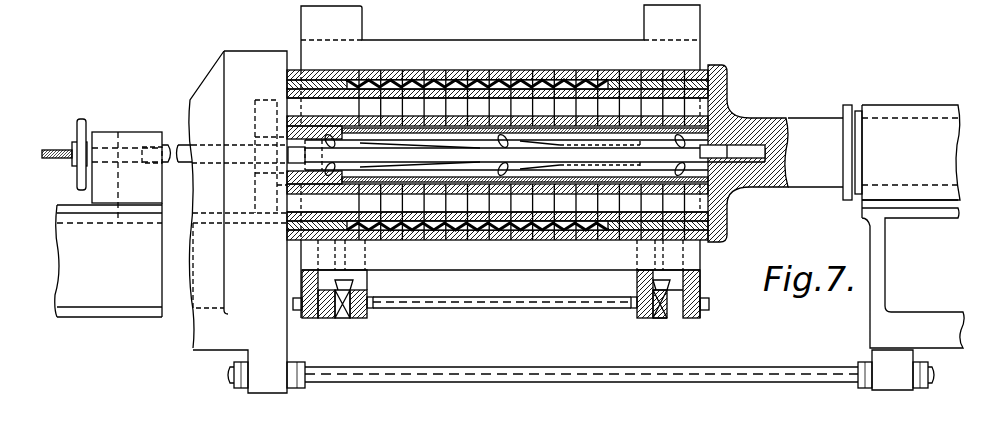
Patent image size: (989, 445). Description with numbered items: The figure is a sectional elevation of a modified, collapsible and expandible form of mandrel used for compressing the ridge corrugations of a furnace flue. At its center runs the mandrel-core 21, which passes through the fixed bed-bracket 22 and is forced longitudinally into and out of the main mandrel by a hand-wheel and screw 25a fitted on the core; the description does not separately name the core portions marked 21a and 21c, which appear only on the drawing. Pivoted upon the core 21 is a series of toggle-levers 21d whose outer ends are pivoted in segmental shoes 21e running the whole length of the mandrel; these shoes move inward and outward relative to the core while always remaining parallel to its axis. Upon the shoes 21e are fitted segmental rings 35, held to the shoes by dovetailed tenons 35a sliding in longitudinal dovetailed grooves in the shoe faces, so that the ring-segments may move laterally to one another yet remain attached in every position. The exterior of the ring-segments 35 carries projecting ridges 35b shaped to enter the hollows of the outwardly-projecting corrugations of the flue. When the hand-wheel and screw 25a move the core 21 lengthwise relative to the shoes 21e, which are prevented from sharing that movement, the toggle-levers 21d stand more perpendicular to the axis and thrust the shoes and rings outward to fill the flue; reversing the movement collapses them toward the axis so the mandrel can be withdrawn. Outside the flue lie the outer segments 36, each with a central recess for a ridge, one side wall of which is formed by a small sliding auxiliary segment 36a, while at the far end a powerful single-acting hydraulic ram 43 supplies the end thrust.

The mandrel-core 21 is at (526, 155).
The shaft portion 21a is at (536, 151).
The shaft portion 21c is at (610, 165).
The toggle-levers 21d is at (338, 167).
The segmental shoes 21e is at (470, 142).
The bed-bracket 22 is at (238, 222).
The hand-wheel and screw 25a is at (65, 144).
The segmental rings 35 is at (497, 155).
The dovetailed tenons 35a is at (423, 186).
The projecting ridges 35b is at (446, 72).
The outer segment 36 is at (574, 77).
The sliding auxiliary segment 36a is at (516, 76).
The hydraulic ram 43 is at (771, 153).